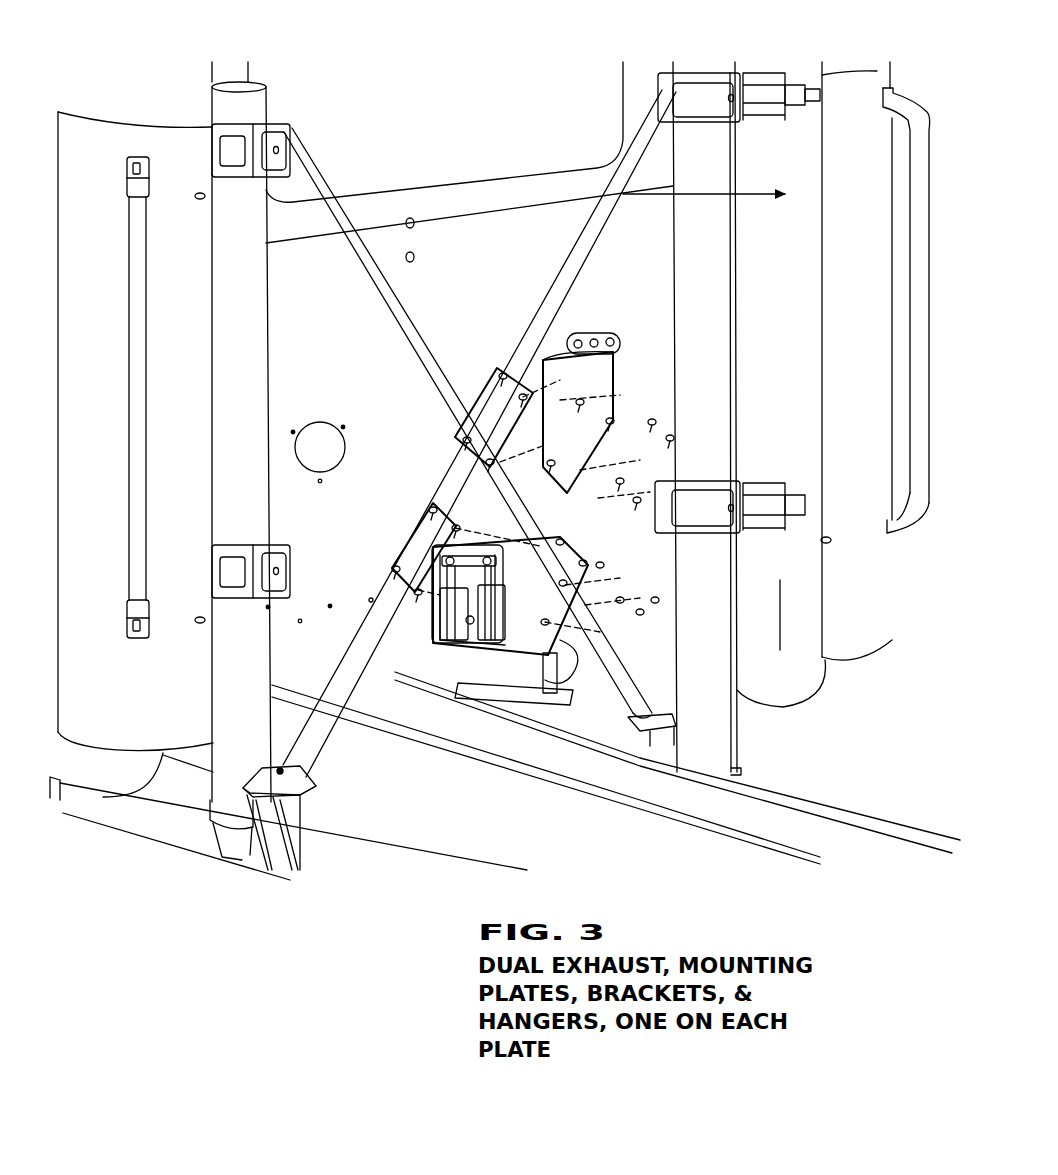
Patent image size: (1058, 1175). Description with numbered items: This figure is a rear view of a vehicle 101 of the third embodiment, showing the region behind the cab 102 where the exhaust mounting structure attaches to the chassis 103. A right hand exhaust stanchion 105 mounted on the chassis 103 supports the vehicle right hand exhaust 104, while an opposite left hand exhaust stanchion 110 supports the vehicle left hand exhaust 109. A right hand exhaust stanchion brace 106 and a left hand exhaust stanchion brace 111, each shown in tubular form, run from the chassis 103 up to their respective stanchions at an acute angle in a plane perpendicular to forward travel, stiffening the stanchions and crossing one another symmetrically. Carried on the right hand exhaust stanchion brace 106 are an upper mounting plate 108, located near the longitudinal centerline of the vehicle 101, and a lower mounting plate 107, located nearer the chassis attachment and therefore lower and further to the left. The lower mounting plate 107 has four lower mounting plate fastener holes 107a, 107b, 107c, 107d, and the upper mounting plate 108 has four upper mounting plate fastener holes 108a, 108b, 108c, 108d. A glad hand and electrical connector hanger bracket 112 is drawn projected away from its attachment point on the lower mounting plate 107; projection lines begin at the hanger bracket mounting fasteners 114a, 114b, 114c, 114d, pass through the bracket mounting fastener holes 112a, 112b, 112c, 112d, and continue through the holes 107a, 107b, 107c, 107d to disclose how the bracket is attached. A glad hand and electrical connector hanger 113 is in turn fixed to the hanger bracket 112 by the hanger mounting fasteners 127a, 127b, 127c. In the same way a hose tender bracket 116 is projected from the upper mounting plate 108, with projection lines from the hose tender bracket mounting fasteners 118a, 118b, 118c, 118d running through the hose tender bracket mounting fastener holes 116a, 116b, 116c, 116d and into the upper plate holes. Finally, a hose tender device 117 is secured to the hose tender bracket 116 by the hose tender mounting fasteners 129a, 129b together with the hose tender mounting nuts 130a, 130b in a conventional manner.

The vehicle 101 is at (530, 223).
The cab 102 is at (463, 246).
The chassis 103 is at (672, 791).
The vehicle right hand exhaust 104 is at (623, 150).
The right hand exhaust stanchion 105 is at (713, 252).
The right hand exhaust stanchion brace 106 is at (578, 263).
The lower mounting plate 107 is at (428, 534).
The lower mounting plate fastener hole 107a is at (434, 506).
The lower mounting plate fastener hole 107b is at (454, 522).
The lower mounting plate fastener hole 107c is at (391, 566).
The lower mounting plate fastener hole 107d is at (412, 590).
The upper mounting plate 108 is at (492, 415).
The upper mounting plate fastener hole 108a is at (519, 376).
The upper mounting plate fastener hole 108b is at (497, 366).
The upper mounting plate fastener hole 108c is at (460, 436).
The upper mounting plate fastener hole 108d is at (484, 461).
The vehicle left hand exhaust 109 is at (218, 298).
The left hand exhaust stanchion 110 is at (236, 337).
The left hand exhaust stanchion brace 111 is at (418, 352).
The glad hand and electrical connector hanger bracket 112 is at (592, 605).
The glad hand and electrical connector hanger bracket mounting fastener hole 112a is at (606, 563).
The glad hand and electrical connector hanger bracket mounting fastener hole 112b is at (622, 640).
The glad hand and electrical connector hanger bracket mounting fastener hole 112c is at (775, 700).
The glad hand and electrical connector hanger bracket mounting fastener hole 112d is at (545, 630).
The glad hand and electrical connector hanger 113 is at (430, 640).
The glad hand and electrical connector hanger bracket mounting fastener 114a is at (622, 590).
The glad hand and electrical connector hanger bracket mounting fastener 114b is at (612, 620).
The glad hand and electrical connector hanger bracket mounting fastener 114c is at (625, 685).
The glad hand and electrical connector hanger bracket mounting fastener 114d is at (622, 700).
The hose tender bracket 116 is at (600, 375).
The hose tender bracket mounting fastener hole 116a is at (600, 395).
The hose tender bracket mounting fastener hole 116b is at (600, 412).
The hose tender bracket mounting fastener hole 116c is at (556, 462).
The hose tender bracket mounting fastener hole 116d is at (614, 462).
The hose tender device 117 is at (610, 329).
The hose tender bracket mounting fastener 118a is at (666, 421).
The hose tender bracket mounting fastener 118b is at (684, 443).
The hose tender bracket mounting fastener 118c is at (616, 486).
The hose tender bracket mounting fastener 118d is at (640, 506).
The glad hand and electrical connector hanger mounting fastener 127a is at (430, 610).
The glad hand and electrical connector hanger mounting fastener 127b is at (294, 450).
The glad hand and electrical connector hanger mounting fastener 127c is at (431, 618).
The hose tender mounting fastener 129a is at (578, 327).
The hose tender mounting fastener 129b is at (614, 325).
The hose tender mounting nut 130a is at (600, 342).
The hose tender mounting nut 130b is at (600, 355).